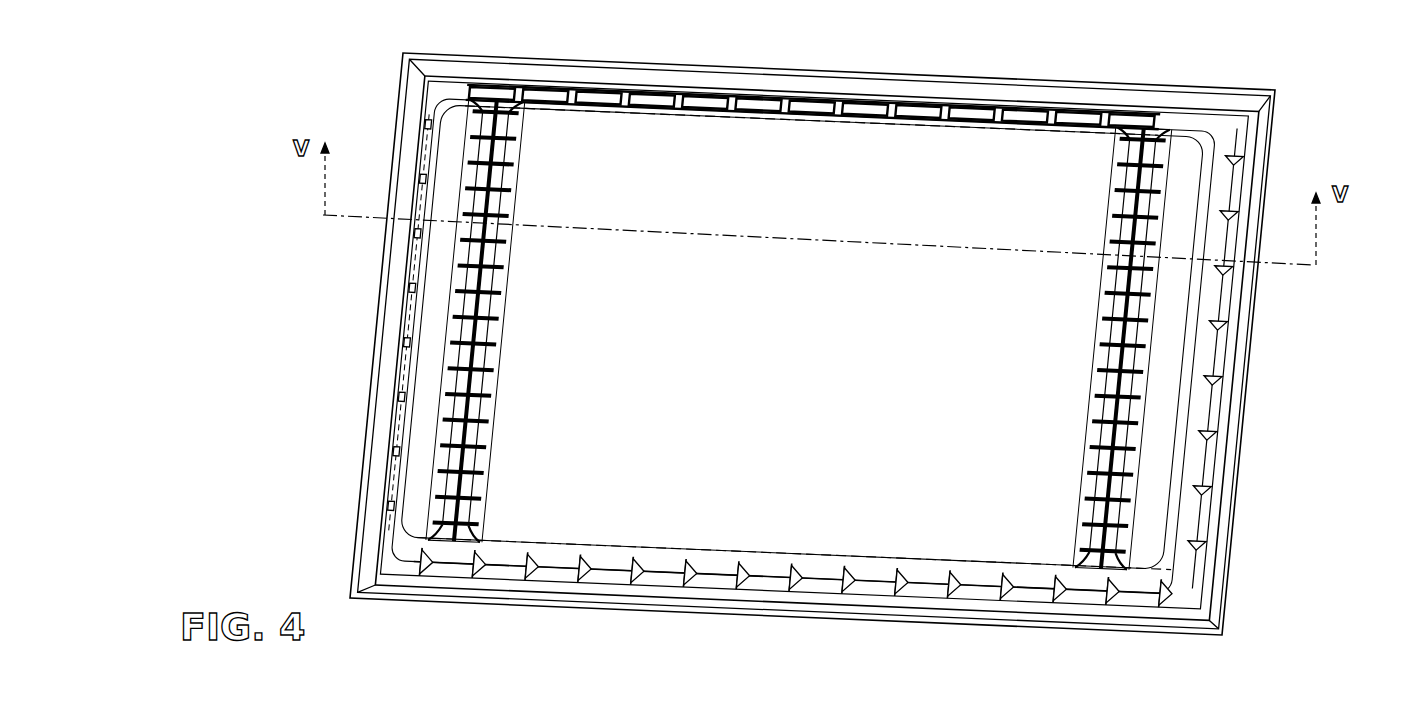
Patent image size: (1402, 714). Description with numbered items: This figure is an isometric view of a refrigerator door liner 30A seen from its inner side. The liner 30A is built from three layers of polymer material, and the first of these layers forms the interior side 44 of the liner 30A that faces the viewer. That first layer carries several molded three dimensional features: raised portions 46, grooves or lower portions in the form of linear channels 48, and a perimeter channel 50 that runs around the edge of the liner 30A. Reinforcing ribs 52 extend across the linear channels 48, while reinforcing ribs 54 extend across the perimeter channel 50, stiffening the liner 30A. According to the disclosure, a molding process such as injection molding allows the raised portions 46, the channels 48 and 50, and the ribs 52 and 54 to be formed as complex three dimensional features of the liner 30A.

The liner 30A is at (1220, 88).
The interior side 44 is at (900, 145).
The raised portions 46 is at (435, 110).
The linear channels 48 is at (504, 105).
The perimeter channel 50 is at (706, 582).
The reinforcing ribs 52 is at (518, 120).
The reinforcing ribs 54 is at (1212, 432).